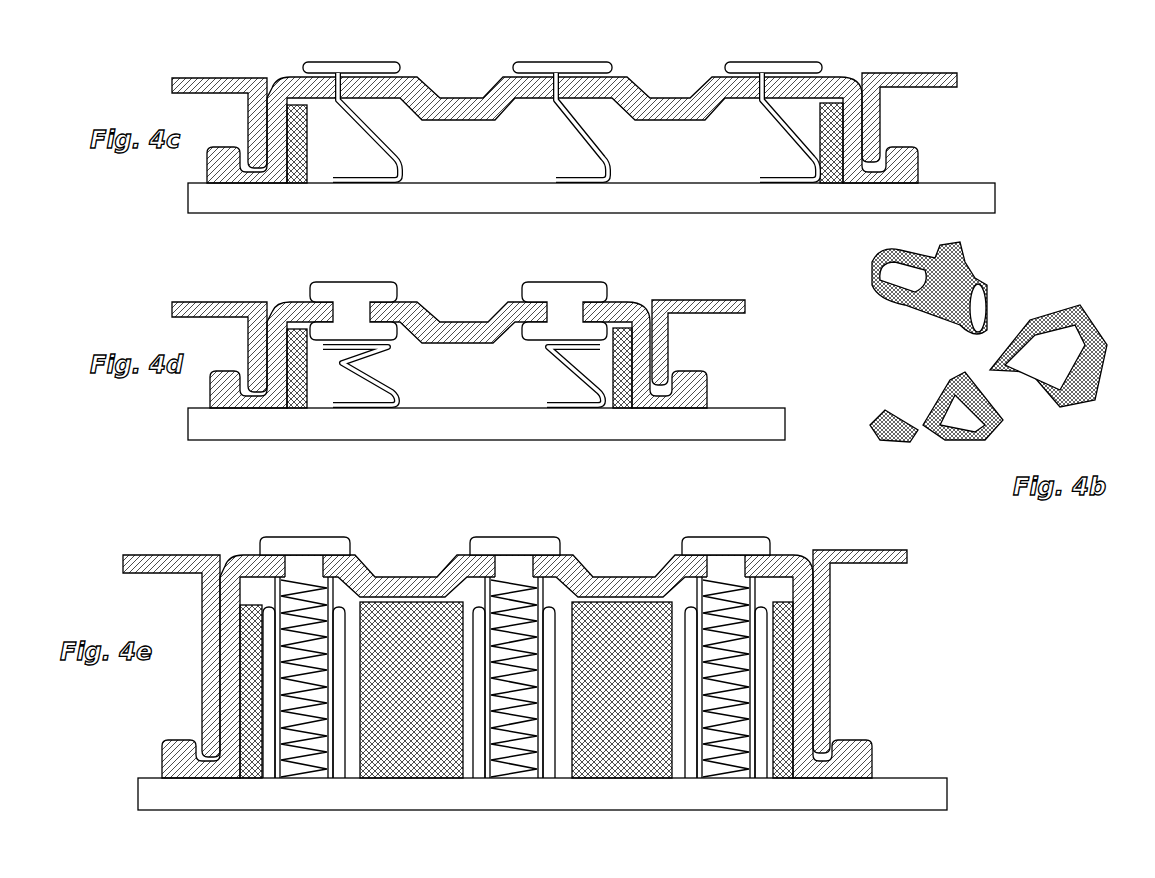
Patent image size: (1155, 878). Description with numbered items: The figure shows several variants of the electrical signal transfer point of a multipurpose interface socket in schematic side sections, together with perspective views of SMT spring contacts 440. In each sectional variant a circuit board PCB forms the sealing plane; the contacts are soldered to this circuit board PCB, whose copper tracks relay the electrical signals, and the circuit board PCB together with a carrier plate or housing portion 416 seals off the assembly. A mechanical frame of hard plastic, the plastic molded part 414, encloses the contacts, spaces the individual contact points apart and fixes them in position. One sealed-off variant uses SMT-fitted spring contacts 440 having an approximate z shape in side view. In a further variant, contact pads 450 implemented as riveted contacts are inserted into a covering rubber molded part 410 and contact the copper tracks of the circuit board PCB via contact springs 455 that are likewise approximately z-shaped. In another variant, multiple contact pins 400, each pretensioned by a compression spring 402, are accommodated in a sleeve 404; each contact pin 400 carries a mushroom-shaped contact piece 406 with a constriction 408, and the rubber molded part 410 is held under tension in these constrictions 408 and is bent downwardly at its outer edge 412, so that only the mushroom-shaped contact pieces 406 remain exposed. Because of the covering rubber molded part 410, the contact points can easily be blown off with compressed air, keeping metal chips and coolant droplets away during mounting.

In FIG. 4E, the contact pin 400 is at (532, 631).
In FIG. 4E, the compression spring 402 is at (306, 665).
In FIG. 4E, the sleeve 404 is at (350, 673).
In FIG. 4E, the mushroom-shaped contact piece 406 is at (283, 537).
In FIG. 4E, the constriction 408 is at (278, 560).
In FIG. 4C, the rubber molded part 410 is at (630, 78).
In FIG. 4E, the rubber molded part 410 is at (517, 644).
In FIG. 4C, the outer edge 412 is at (562, 112).
In FIG. 4D, the outer edge 412 is at (630, 300).
In FIG. 4E, the outer edge 412 is at (517, 644).
In FIG. 4C, the plastic molded part 414 is at (297, 167).
In FIG. 4D, the plastic molded part 414 is at (297, 388).
In FIG. 4E, the plastic molded part 414 is at (247, 643).
In FIG. 4C, the housing 416 is at (197, 82).
In FIG. 4D, the housing 416 is at (197, 307).
In FIG. 4E, the housing 416 is at (160, 556).
In FIG. 4C, the SMT spring contact 440 is at (350, 63).
In FIG. 4B, the SMT spring contact 440 is at (962, 240).
In FIG. 4D, the contact pad 450 is at (357, 290).
In FIG. 4D, the contact spring 455 is at (557, 360).
In FIG. 4C, the circuit board PCB is at (947, 183).
In FIG. 4D, the circuit board PCB is at (760, 390).
In FIG. 4E, the circuit board PCB is at (897, 778).